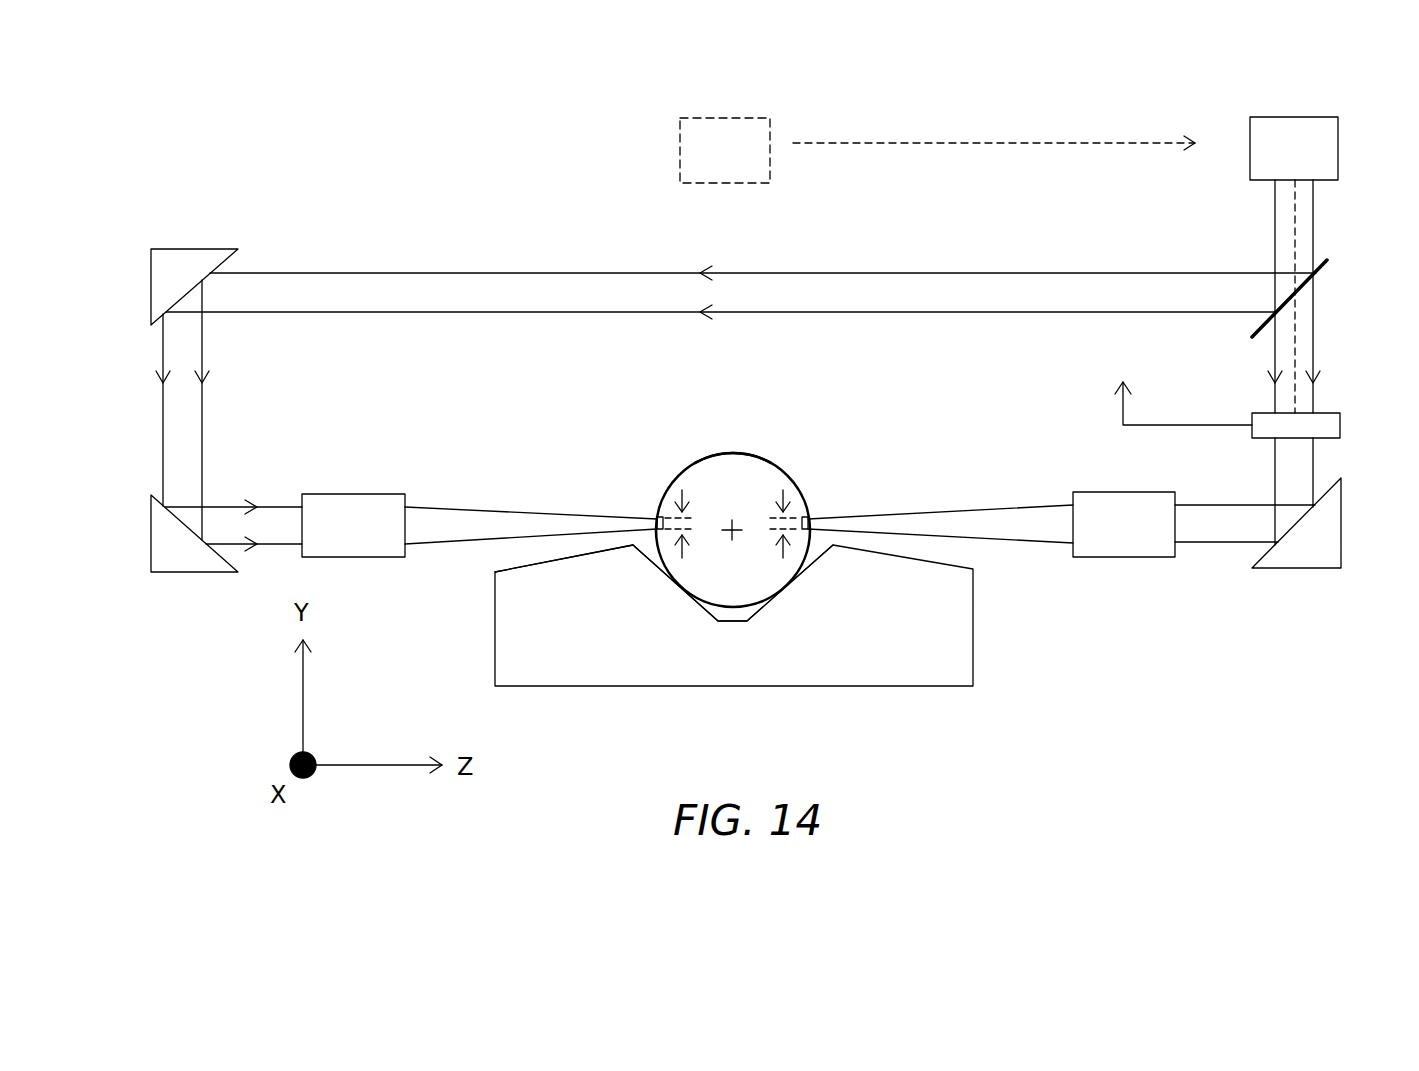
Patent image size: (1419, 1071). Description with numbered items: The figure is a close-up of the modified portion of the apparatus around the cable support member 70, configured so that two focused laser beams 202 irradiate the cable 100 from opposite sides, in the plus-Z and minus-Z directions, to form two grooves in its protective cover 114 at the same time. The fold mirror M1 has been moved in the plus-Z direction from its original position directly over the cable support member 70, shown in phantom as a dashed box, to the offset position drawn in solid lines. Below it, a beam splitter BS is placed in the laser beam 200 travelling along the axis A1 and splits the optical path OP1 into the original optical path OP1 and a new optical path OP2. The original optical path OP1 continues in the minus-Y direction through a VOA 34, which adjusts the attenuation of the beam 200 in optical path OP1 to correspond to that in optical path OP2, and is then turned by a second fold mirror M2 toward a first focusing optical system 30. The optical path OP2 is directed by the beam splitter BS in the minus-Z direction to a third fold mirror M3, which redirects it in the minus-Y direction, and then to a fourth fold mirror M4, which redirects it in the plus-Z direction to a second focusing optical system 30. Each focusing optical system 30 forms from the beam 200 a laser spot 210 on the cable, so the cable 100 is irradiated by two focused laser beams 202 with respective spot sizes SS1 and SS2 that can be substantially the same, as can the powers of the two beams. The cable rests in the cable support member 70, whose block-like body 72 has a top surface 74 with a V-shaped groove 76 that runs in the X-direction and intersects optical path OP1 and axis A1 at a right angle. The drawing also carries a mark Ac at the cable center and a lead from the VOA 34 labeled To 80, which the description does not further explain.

The fold mirror M1 is at (697, 118).
The second fold mirror M2 is at (1303, 556).
The third fold mirror M3 is at (189, 252).
The fourth fold mirror M4 is at (186, 562).
The laser beam 200 is at (412, 273).
The optical path OP1 is at (1322, 218).
The optical path OP2 is at (955, 259).
The axis A1 is at (1297, 250).
The beam splitter BS is at (1330, 262).
The VOA 34 is at (1340, 425).
The controller 80 is at (1168, 389).
The focusing optical system 30 is at (738, 524).
The cable support member 70 is at (934, 389).
The focused laser beams 202 is at (550, 503).
The cable 100 is at (745, 444).
The protective cover 114 is at (713, 453).
The fiber central axis Ac is at (730, 533).
The laser spot 210 is at (660, 517).
The spot size SS1 is at (783, 492).
The spot size SS2 is at (682, 490).
The block-like body 72 is at (734, 615).
The top surface 74 is at (513, 568).
The groove 76 is at (768, 609).